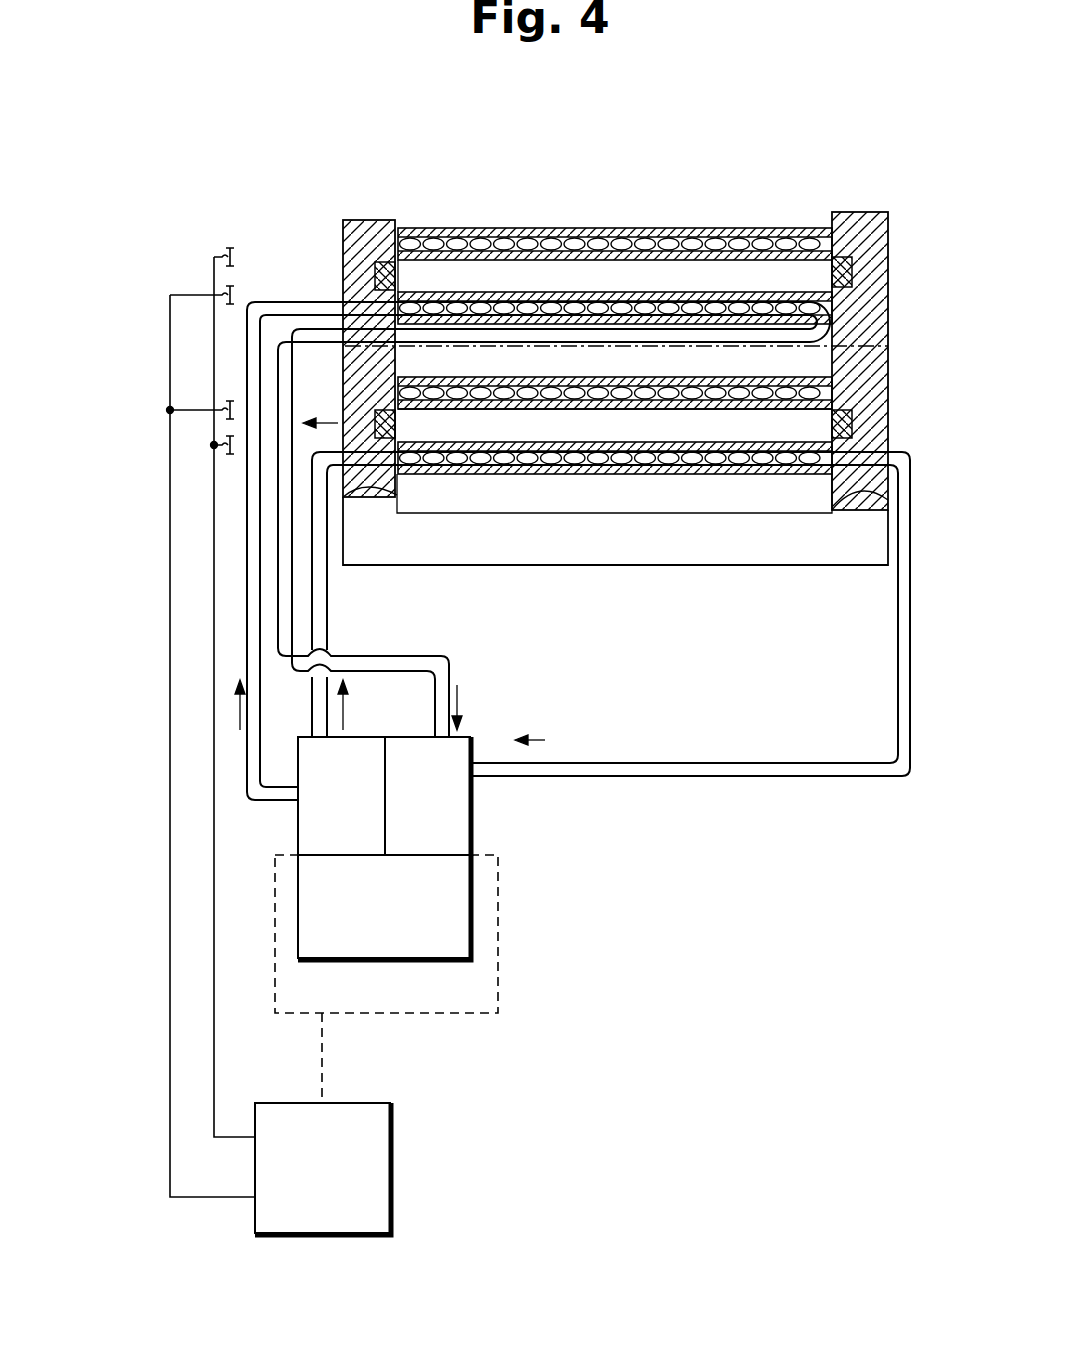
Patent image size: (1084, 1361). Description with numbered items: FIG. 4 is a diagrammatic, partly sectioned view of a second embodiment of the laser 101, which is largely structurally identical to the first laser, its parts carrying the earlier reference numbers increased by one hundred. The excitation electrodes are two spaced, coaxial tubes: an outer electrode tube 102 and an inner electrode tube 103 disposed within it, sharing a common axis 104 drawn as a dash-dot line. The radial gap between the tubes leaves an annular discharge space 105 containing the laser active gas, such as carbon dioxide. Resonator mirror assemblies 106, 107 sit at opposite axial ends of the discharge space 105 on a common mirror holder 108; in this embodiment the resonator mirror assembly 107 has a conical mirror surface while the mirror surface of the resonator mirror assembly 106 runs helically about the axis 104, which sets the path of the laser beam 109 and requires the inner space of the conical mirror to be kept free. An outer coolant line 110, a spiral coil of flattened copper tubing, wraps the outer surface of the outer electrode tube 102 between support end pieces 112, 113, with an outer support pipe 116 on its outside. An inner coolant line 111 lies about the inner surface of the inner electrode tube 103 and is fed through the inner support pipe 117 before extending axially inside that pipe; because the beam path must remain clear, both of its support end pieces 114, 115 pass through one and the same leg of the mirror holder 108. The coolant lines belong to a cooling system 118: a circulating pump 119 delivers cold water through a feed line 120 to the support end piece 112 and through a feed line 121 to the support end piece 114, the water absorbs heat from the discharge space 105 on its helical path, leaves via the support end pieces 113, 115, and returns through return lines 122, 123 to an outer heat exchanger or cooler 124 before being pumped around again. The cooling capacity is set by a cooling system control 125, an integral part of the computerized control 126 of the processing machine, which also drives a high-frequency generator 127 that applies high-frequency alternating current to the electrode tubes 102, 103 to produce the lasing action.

The laser 101 is at (885, 202).
The outer electrode tube 102 is at (407, 272).
The inner electrode tube 103 is at (612, 410).
The axis 104 is at (868, 346).
The discharge space 105 is at (463, 270).
The resonator mirror assembly 106 is at (382, 262).
The resonator mirror assembly 107 is at (850, 240).
The mirror holder 108 is at (740, 545).
The laser beam 109 is at (325, 423).
The outer coolant line 110 is at (535, 462).
The inner coolant line 111 is at (460, 412).
The support end piece 112 is at (372, 488).
The support end piece 113 is at (862, 452).
The support end piece 114 is at (373, 284).
The support end piece 115 is at (312, 337).
The outer support pipe 116 is at (566, 228).
The inner support pipe 117 is at (672, 292).
The cooling system 118 is at (490, 723).
The circulating pump 119 is at (318, 812).
The feed line 120 is at (320, 585).
The feed line 121 is at (258, 655).
The return line 122 is at (910, 657).
The return line 123 is at (290, 379).
The heat exchanger 124 is at (406, 812).
The cooling system control 125 is at (361, 920).
The computerized control 126 is at (513, 878).
The high-frequency generator 127 is at (298, 1179).